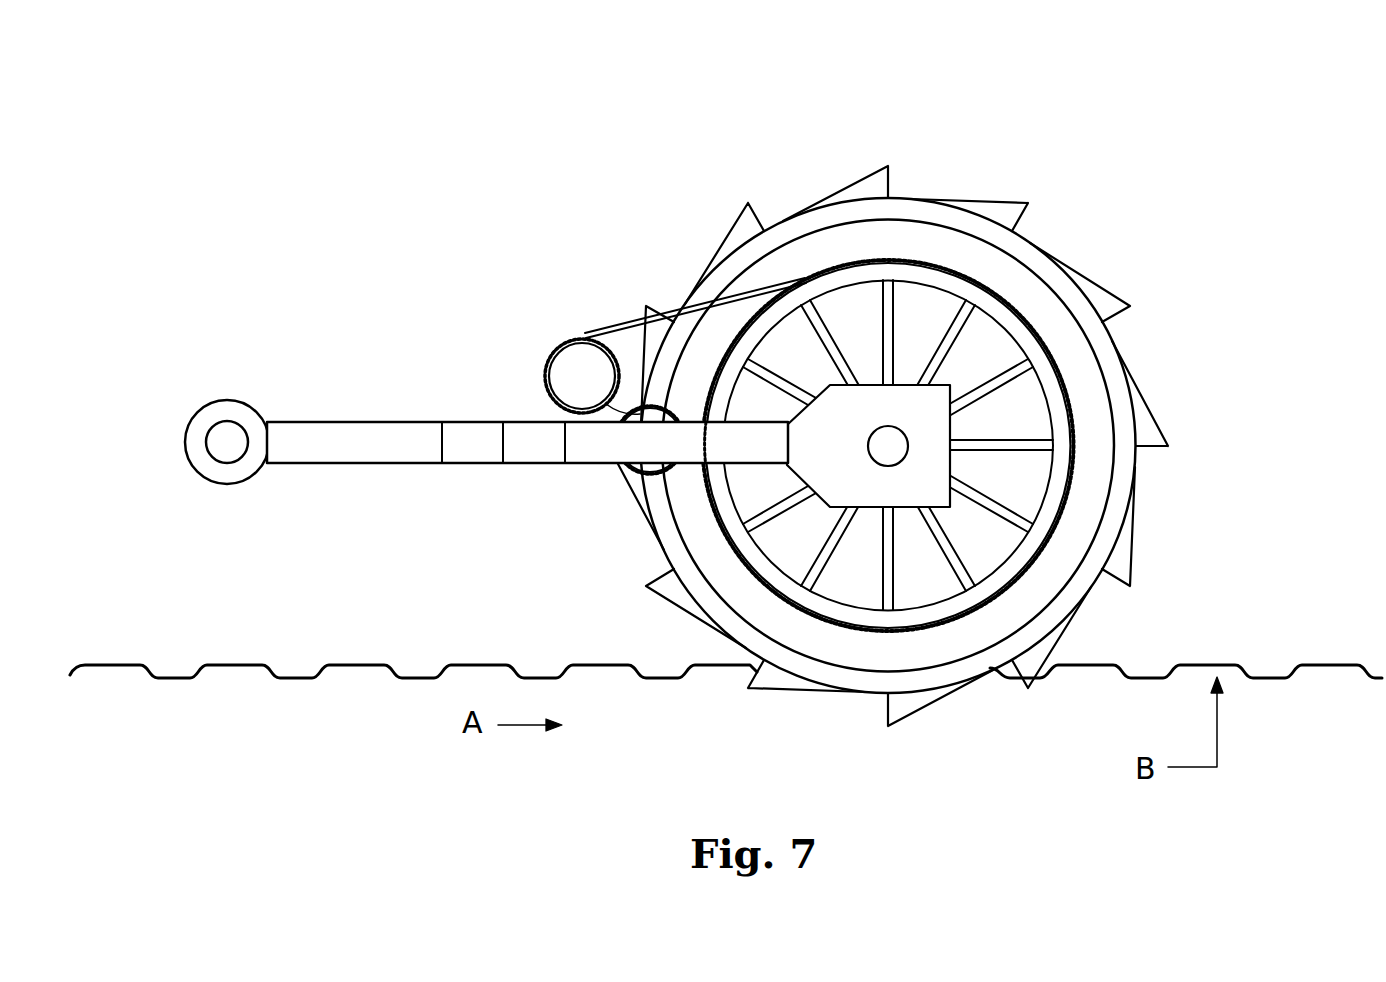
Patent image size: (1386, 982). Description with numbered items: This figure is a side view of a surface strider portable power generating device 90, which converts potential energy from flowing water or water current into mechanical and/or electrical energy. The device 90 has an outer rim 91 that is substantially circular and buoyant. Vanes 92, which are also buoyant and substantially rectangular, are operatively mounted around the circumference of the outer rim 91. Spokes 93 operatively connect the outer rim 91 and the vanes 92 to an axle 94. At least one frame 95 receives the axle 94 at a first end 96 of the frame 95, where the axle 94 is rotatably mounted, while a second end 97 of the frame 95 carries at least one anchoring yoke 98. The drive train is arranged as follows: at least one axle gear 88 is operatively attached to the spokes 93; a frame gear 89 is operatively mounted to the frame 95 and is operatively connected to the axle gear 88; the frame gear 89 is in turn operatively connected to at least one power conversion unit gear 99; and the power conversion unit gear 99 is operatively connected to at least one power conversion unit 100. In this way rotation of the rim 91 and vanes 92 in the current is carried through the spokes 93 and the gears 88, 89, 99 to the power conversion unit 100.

The axle gear 88 is at (1063, 382).
The frame gear 89 is at (647, 470).
The surface strider portable power generating device 90 is at (936, 423).
The outer rim 91 is at (1038, 250).
The vanes 92 is at (1160, 420).
The spokes 93 is at (822, 568).
The axle 94 is at (905, 460).
The frame 95 is at (488, 463).
The first end 96 is at (812, 519).
The second end 97 is at (447, 409).
The anchoring yoke 98 is at (248, 403).
The power conversion unit gear 99 is at (577, 340).
The power conversion unit 100 is at (542, 373).